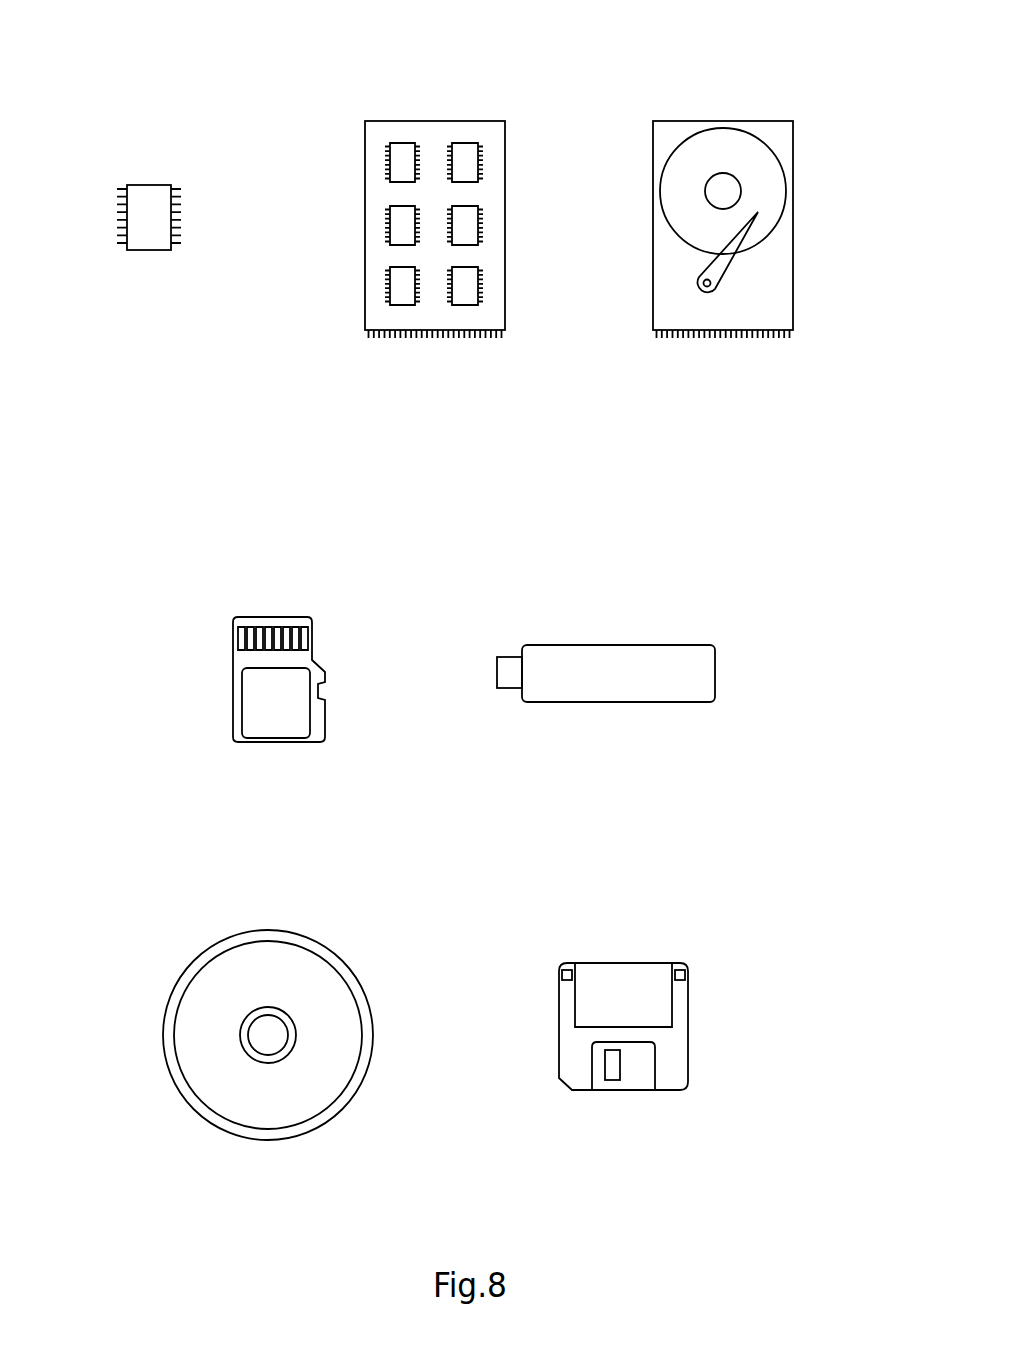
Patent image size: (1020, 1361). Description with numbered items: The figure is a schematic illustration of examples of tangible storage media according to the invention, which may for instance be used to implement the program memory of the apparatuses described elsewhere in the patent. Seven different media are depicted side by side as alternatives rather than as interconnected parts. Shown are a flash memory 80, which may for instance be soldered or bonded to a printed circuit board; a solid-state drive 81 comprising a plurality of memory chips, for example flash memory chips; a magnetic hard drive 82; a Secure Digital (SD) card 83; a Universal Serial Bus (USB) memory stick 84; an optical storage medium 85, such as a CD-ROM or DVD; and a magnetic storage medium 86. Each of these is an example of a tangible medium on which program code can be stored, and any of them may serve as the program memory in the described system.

The flash memory 80 is at (175, 145).
The solid-state drive 81 is at (507, 82).
The magnetic hard drive 82 is at (795, 82).
The Secure Digital (SD) card 83 is at (315, 585).
The Universal Serial Bus (USB) memory stick 84 is at (690, 605).
The optical storage medium 85 is at (353, 925).
The magnetic storage medium 86 is at (682, 925).